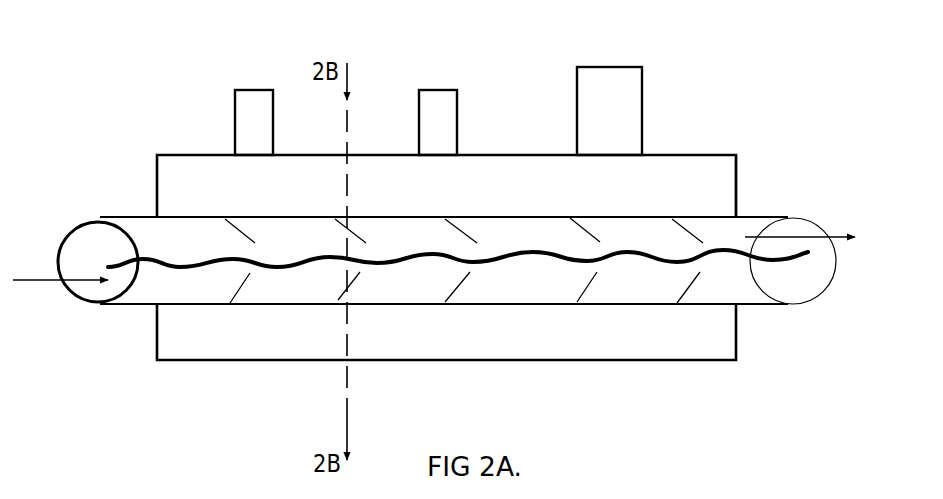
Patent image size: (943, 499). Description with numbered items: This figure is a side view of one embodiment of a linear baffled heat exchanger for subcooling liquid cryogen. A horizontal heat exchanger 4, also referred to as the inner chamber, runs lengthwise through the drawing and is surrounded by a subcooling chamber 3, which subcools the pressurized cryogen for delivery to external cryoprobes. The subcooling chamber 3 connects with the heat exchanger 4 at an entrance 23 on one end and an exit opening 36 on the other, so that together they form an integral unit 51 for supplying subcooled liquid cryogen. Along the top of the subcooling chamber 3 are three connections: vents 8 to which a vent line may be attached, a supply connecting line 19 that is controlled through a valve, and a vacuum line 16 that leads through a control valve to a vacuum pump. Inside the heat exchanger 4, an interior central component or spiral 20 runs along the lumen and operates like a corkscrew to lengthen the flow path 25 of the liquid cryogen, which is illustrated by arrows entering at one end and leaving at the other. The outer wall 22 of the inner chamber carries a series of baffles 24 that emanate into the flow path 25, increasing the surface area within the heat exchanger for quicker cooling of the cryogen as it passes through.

The subcooling chamber 3 is at (198, 360).
The heat exchanger 4 is at (295, 287).
The vents 8 is at (258, 89).
The vacuum line 16 is at (603, 66).
The supply connecting line 19 is at (438, 89).
The spiral 20 is at (410, 265).
The outer wall 22 is at (526, 306).
The entrance 23 is at (157, 217).
The baffles 24 is at (688, 236).
The flow path 25 is at (435, 245).
The exit opening 36 is at (737, 217).
The integral unit 51 is at (727, 405).